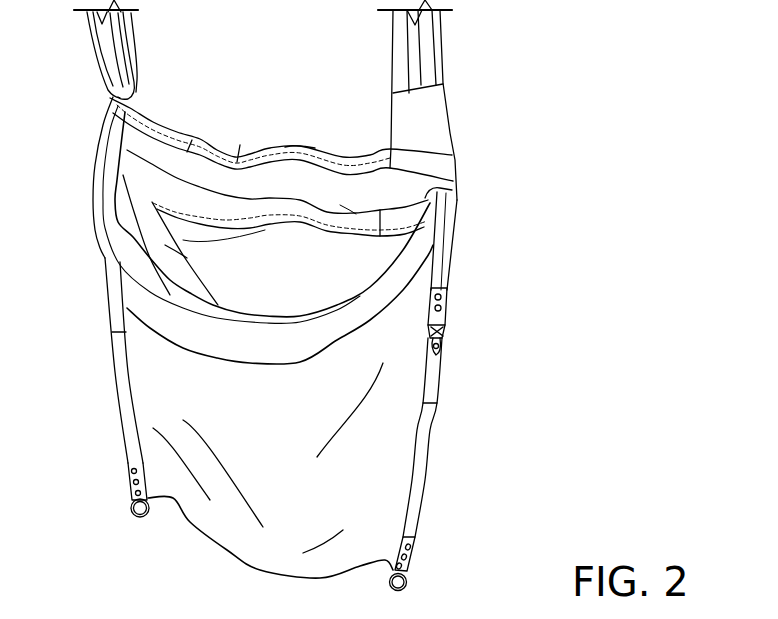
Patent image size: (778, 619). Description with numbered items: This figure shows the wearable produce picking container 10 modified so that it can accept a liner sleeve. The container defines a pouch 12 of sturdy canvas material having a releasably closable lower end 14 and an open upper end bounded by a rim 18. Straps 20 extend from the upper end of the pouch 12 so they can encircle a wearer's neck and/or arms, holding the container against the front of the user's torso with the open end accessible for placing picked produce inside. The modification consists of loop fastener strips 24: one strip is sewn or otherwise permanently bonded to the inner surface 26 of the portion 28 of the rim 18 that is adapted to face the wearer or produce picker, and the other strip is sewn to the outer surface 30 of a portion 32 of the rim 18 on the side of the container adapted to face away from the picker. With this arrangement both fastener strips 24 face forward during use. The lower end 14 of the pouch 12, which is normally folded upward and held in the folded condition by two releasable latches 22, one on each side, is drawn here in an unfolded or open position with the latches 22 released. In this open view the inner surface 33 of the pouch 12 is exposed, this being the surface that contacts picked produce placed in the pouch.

The wearable produce picking container 10 is at (470, 50).
The pouch 12 is at (455, 437).
The releasably closable lower end 14 is at (432, 556).
The rim 18 is at (437, 217).
The straps 20 is at (130, 59).
The releasable latches 22 is at (447, 333).
The loop fastener strips 24 is at (425, 287).
The inner surface 26 is at (237, 162).
The portion 28 is at (300, 146).
The outer surface 30 is at (105, 258).
The portion 32 is at (187, 258).
The inner surface 33 is at (344, 272).